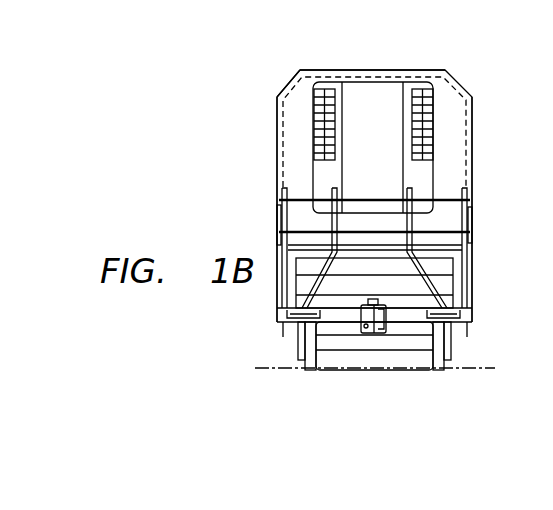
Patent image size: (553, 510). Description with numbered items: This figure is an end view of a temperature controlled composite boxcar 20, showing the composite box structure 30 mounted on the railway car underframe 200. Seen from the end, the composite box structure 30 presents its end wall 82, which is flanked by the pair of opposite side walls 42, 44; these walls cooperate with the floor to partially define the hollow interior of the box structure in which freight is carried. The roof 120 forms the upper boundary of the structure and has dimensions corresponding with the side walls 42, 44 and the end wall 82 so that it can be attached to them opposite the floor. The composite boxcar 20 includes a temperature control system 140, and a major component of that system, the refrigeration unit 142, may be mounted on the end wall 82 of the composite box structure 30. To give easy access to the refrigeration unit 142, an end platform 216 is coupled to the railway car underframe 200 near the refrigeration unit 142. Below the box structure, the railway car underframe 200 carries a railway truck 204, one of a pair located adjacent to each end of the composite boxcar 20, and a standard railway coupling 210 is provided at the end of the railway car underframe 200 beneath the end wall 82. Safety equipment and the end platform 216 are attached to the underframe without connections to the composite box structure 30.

The temperature controlled composite boxcar 20 is at (377, 212).
The composite box structure 30 is at (374, 167).
The side wall 42 is at (277, 130).
The side wall 44 is at (474, 133).
The end wall 82 is at (300, 98).
The roof 120 is at (331, 69).
The temperature control system 140 is at (372, 100).
The refrigeration unit 142 is at (395, 170).
The railway car underframe 200 is at (377, 274).
The railway truck 204 is at (397, 347).
The railway coupling 210 is at (363, 314).
The end platform 216 is at (481, 242).